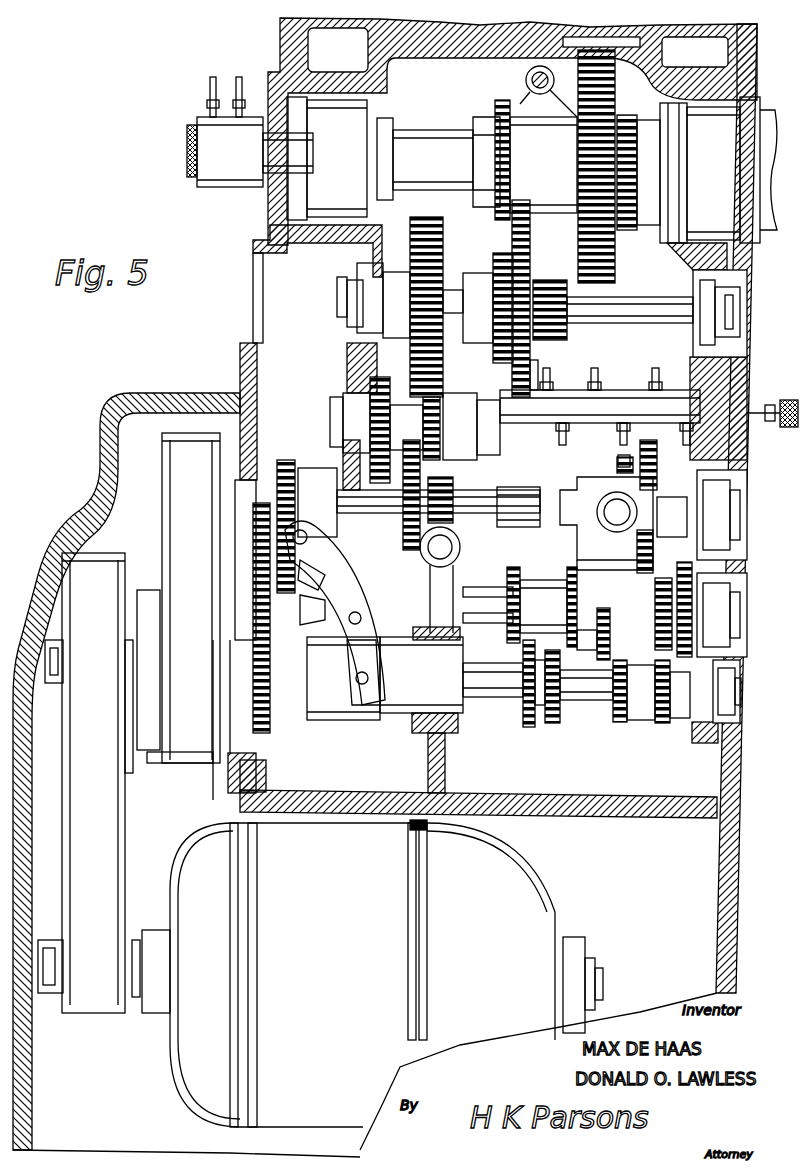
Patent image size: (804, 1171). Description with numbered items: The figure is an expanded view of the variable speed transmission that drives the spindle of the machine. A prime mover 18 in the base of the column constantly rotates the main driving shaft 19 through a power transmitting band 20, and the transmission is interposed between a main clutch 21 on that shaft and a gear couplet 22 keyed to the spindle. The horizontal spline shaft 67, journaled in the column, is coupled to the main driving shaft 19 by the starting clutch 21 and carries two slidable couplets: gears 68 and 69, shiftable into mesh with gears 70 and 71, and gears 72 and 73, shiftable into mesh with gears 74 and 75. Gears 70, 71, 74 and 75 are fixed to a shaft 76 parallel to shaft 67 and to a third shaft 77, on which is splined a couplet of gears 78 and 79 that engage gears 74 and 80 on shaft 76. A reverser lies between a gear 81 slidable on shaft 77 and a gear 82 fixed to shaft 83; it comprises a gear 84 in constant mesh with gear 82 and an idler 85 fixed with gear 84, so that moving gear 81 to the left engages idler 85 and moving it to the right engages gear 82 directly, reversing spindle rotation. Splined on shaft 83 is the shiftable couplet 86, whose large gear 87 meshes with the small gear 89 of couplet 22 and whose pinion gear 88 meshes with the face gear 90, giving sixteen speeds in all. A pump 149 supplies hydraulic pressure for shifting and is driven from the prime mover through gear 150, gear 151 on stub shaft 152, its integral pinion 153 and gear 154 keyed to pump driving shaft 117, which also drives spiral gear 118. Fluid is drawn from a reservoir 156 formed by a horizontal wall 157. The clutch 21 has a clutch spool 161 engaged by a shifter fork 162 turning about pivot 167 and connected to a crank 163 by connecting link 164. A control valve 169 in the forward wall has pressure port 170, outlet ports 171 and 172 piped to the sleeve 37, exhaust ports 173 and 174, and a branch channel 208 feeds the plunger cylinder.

The prime mover 18 is at (530, 880).
The main driving shaft 19 is at (48, 683).
The power transmitting band 20 is at (112, 822).
The main clutch 21 is at (308, 730).
The gear couplet 22 is at (500, 92).
The sleeve 37 is at (240, 180).
The horizontal spline shaft 67 is at (505, 700).
The gear 68 is at (523, 727).
The gear 69 is at (553, 723).
The gear 70 is at (520, 572).
The gear 71 is at (555, 556).
The gear 72 is at (620, 722).
The gear 73 is at (663, 723).
The gear 74 is at (612, 640).
The gear 75 is at (716, 650).
The shaft 76 is at (485, 623).
The third shaft 77 is at (673, 503).
The gear 78 is at (617, 465).
The gear 79 is at (617, 455).
The gear 80 is at (672, 580).
The gear 81 is at (403, 545).
The gear 82 is at (425, 230).
The shaft 83 is at (630, 323).
The gear 84 is at (423, 400).
The idler 85 is at (370, 400).
The shiftable gear couplet 86 is at (500, 255).
The large gear 87 is at (530, 347).
The pinion gear 88 is at (538, 375).
The small gear 89 is at (495, 110).
The face gear 90 is at (615, 258).
The shaft 117 is at (520, 535).
The spiral gear 118 is at (453, 490).
The pump 149 is at (590, 490).
The gear 150 is at (262, 733).
The gear 151 is at (262, 503).
The stub shaft 152 is at (335, 572).
The pinion 153 is at (318, 594).
The gear 154 is at (287, 460).
The reservoir 156 is at (405, 795).
The horizontal wall 157 is at (617, 820).
The clutch spool 161 is at (368, 710).
The shifter fork 162 is at (360, 593).
The crank 163 is at (524, 80).
The connecting link 164 is at (565, 268).
The pivot 167 is at (360, 618).
The control valve 169 is at (608, 390).
The pressure port 170 is at (628, 438).
The outlet port 171 is at (600, 380).
The outlet port 172 is at (657, 380).
The exhaust port 173 is at (680, 448).
The exhaust port 174 is at (556, 440).
The branch channel 208 is at (550, 378).